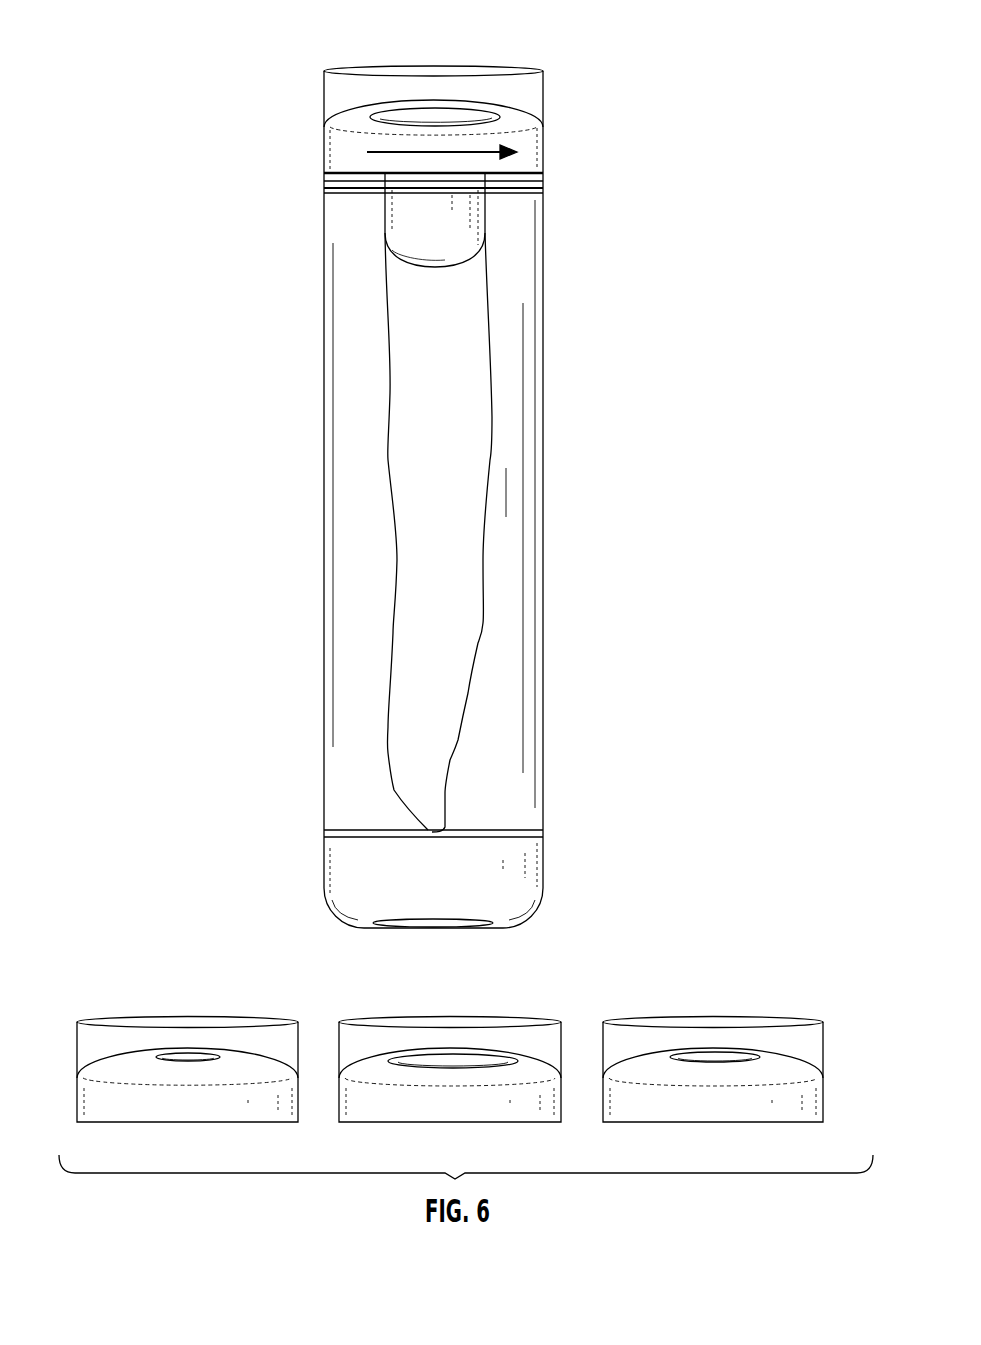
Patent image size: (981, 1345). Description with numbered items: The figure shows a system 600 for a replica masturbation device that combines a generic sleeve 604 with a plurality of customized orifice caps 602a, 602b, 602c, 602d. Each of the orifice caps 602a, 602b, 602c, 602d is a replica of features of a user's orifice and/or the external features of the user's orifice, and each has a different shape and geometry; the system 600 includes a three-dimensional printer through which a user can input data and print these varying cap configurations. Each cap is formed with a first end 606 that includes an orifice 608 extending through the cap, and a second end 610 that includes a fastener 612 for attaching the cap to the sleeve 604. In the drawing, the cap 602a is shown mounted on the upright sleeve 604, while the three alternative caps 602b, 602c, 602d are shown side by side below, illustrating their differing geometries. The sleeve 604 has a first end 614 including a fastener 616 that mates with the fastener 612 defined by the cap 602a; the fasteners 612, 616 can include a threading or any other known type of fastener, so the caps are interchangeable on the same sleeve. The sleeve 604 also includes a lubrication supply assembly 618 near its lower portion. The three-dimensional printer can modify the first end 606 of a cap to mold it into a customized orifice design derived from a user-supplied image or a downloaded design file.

The system 600 is at (287, 356).
The customized orifice cap 602a is at (545, 110).
The customized orifice cap 602b is at (270, 1017).
The customized orifice cap 602c is at (532, 1017).
The customized orifice cap 602d is at (795, 1017).
The generic sleeve 604 is at (532, 443).
The first end 606 is at (513, 70).
The orifice 608 is at (441, 116).
The second end 610 is at (513, 170).
The fastener 612 is at (530, 174).
The first end 614 is at (352, 194).
The fastener 616 is at (337, 181).
The lubrication supply assembly 618 is at (513, 868).